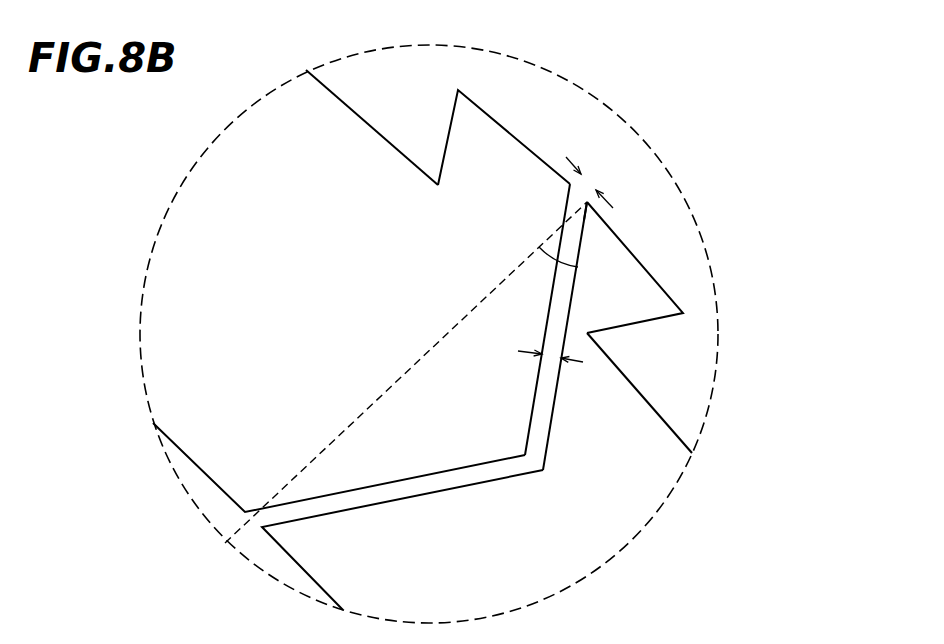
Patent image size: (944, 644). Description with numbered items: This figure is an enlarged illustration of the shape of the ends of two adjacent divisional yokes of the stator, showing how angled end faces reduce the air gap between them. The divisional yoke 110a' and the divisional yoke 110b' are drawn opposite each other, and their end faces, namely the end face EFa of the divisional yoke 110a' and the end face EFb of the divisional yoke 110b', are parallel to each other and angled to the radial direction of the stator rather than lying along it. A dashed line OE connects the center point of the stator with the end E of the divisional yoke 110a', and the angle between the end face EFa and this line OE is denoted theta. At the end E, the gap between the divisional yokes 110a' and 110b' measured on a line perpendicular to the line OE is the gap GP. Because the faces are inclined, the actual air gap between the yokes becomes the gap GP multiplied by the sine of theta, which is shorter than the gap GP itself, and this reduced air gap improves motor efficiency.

The divisional yoke 110b' is at (372, 127).
The divisional yoke 110a' is at (644, 393).
The end face EFb is at (560, 252).
The end face EFa is at (578, 242).
The end of the divisional yoke E is at (589, 204).
The gap GP is at (596, 182).
The line connecting the center point O of the stator and end E OE is at (408, 368).